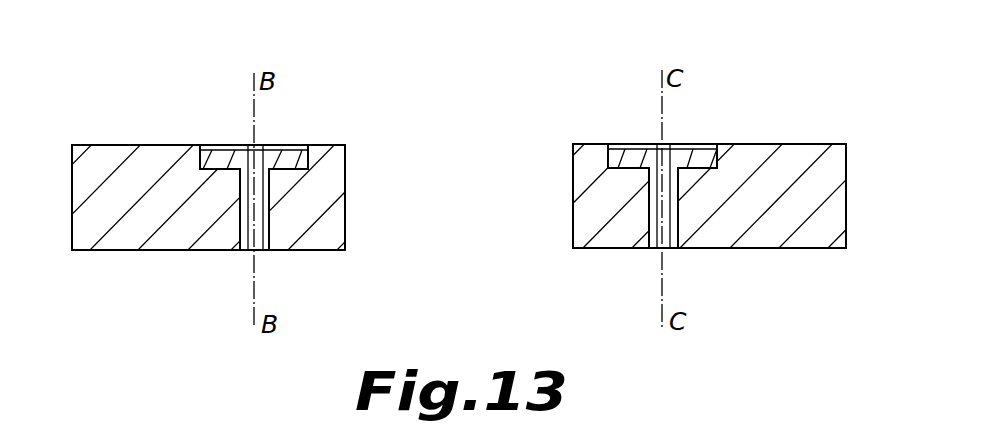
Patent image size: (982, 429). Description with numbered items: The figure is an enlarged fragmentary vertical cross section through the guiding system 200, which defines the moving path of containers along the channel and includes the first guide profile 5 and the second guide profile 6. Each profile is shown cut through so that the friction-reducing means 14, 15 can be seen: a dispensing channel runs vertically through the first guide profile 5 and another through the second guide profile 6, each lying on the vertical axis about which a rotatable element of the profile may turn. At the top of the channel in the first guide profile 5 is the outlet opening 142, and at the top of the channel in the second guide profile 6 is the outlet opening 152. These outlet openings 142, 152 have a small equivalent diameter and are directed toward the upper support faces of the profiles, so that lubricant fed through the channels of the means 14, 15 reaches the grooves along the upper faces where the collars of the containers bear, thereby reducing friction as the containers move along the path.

The first guide profile 5 is at (124, 145).
The means for reducing friction 14 is at (262, 212).
The outlet opening 142 is at (262, 146).
The second guide profile 6 is at (813, 144).
The means for reducing friction 15 is at (657, 208).
The outlet opening 152 is at (656, 147).
The guiding system 200 is at (715, 172).